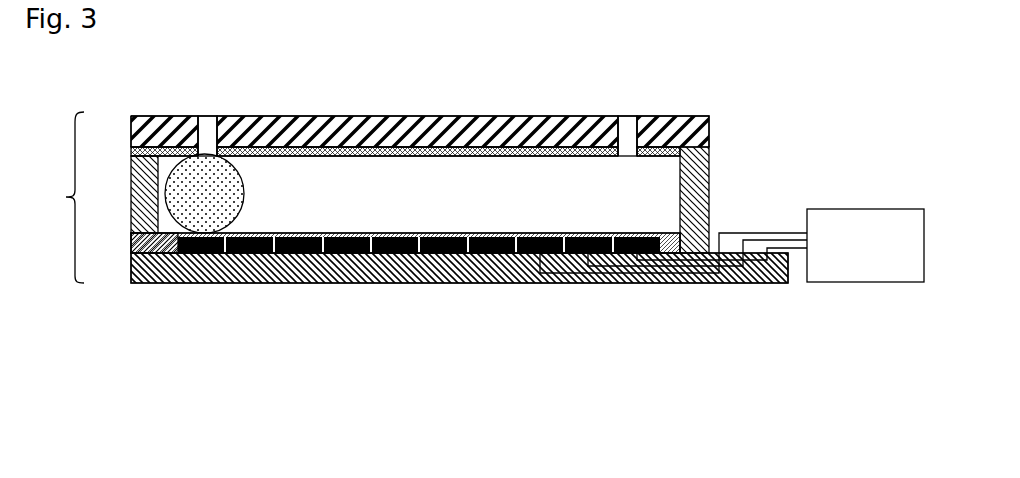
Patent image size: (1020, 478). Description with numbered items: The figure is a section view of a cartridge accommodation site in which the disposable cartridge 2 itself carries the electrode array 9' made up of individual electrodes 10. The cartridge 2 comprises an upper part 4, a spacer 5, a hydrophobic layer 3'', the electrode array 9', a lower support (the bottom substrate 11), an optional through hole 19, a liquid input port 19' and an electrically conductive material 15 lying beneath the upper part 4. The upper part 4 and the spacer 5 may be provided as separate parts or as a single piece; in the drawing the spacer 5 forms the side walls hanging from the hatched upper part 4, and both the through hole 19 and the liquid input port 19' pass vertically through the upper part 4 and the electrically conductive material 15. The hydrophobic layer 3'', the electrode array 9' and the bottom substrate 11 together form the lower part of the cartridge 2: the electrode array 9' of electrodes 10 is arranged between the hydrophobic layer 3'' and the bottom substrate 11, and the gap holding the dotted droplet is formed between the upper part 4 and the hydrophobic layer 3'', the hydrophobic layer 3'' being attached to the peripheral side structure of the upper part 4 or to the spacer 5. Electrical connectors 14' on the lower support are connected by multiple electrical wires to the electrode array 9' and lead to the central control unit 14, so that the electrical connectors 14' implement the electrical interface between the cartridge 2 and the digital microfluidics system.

The disposable cartridge 2 is at (214, 224).
The hydrophobic layer 3'' is at (135, 284).
The upper part 4 is at (524, 119).
The spacer 5 is at (133, 188).
The electrode array 9' is at (308, 305).
The electrode 10 is at (522, 256).
The bottom substrate 11 is at (405, 275).
The central control unit 14 is at (865, 245).
The electrical connectors 14' is at (673, 300).
The electrically conductive material 15 is at (317, 150).
The through hole 19 is at (648, 107).
The liquid input port 19' is at (185, 107).